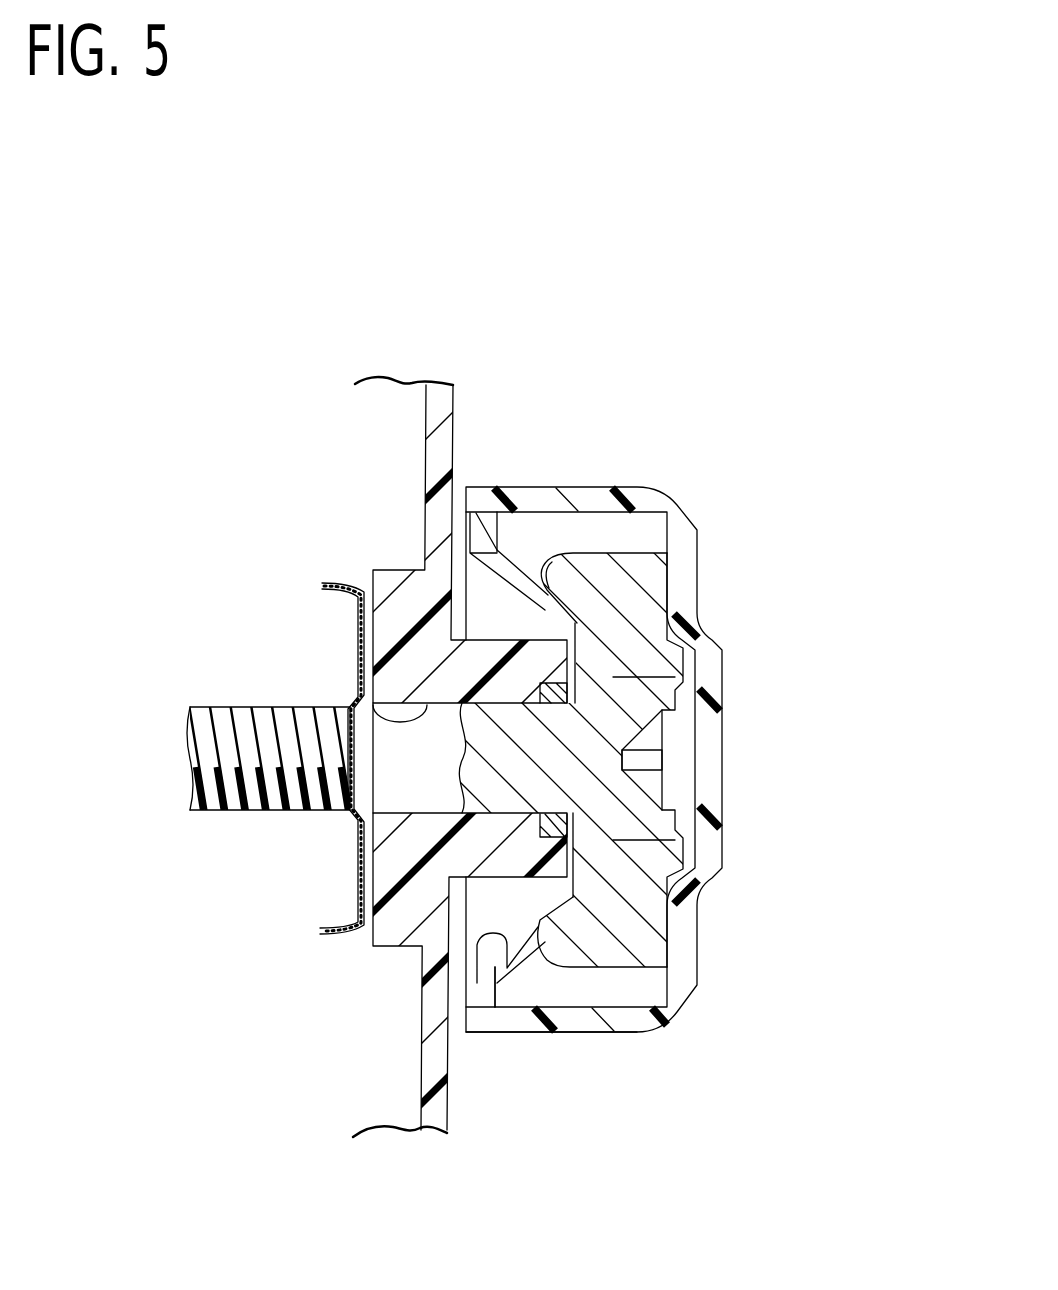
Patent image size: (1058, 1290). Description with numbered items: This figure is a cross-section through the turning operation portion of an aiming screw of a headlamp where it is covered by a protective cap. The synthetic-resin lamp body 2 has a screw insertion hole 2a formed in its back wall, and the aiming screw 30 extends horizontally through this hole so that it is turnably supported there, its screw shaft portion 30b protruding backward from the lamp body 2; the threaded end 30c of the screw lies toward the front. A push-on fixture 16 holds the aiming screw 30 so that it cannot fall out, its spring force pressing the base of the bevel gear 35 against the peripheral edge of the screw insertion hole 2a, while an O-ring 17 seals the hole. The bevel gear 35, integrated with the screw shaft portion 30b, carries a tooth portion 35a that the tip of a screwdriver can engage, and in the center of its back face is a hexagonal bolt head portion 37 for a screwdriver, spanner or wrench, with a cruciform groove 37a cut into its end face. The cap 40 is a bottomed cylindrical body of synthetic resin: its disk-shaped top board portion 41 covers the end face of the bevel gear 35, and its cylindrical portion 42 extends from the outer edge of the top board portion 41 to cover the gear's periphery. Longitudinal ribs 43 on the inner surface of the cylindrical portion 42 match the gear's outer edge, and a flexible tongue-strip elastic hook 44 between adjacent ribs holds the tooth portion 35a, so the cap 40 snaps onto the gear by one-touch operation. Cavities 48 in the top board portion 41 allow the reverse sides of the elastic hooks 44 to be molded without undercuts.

The lamp body 2 is at (423, 1062).
The screw insertion hole 2a is at (352, 706).
The push-on fixture 16 is at (363, 610).
The O-ring 17 is at (600, 836).
The aiming screw 30 is at (233, 831).
The screw shaft portion 30b is at (413, 790).
The screw thread 30c is at (281, 812).
The bevel gear 35 is at (638, 551).
The tooth portion 35a is at (573, 558).
The hexagonal bolt head portion 37 is at (678, 697).
The cruciform groove 37a is at (645, 760).
The cap 40 is at (602, 770).
The top board portion 41 is at (697, 904).
The cylindrical portion 42 is at (602, 1033).
The longitudinal rib 43 is at (540, 530).
The elastic hook 44 is at (507, 570).
The cavity 48 is at (697, 560).